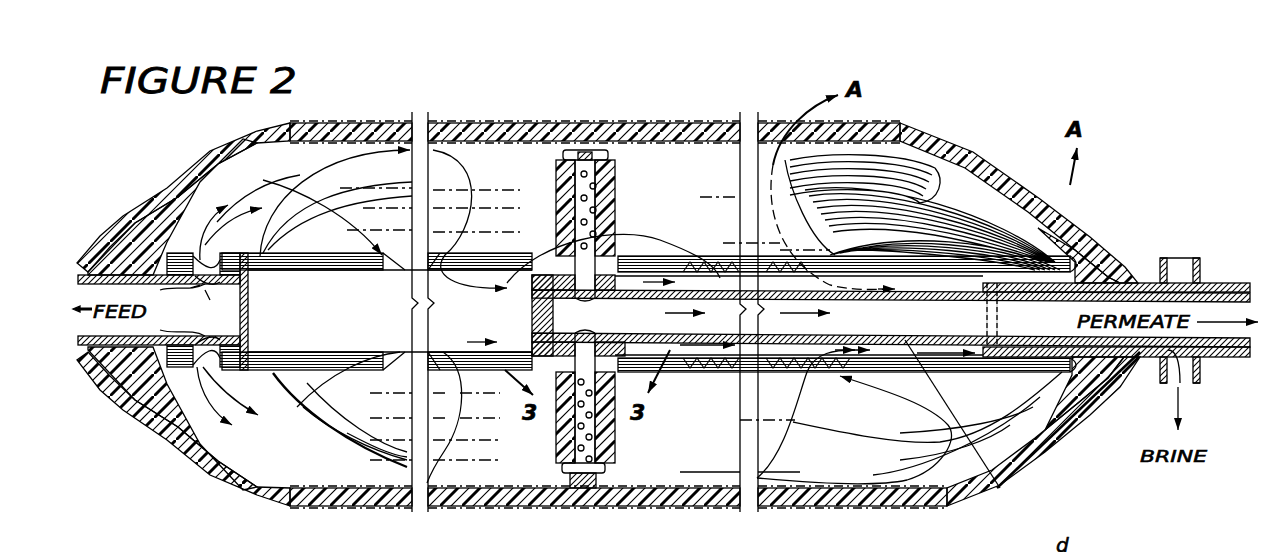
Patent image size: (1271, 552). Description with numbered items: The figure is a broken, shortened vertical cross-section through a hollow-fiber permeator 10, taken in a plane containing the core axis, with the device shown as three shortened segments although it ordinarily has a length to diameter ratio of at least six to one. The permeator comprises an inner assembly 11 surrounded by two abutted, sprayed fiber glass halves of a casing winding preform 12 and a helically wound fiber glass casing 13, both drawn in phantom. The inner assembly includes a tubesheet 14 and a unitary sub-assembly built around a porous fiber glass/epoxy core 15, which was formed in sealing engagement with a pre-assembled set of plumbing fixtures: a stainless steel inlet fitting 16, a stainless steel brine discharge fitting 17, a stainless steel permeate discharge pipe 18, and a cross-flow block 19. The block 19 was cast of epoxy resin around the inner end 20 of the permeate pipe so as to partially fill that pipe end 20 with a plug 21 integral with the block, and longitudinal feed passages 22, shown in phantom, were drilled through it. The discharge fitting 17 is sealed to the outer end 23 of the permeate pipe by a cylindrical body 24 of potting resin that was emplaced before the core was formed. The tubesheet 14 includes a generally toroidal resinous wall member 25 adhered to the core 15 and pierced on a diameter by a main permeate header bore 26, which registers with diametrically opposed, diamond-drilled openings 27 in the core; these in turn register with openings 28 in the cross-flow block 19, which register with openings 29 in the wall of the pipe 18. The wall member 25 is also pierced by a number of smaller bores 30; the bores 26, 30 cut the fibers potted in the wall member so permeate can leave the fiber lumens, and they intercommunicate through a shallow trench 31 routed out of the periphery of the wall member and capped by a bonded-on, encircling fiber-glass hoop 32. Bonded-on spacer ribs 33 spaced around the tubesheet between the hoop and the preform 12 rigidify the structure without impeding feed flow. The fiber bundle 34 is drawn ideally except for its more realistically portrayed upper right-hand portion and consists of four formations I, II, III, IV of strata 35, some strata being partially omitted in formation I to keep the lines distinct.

The permeator 10 is at (935, 522).
The inner assembly 11 is at (305, 458).
The casing winding preform 12 is at (357, 507).
The fiber glass casing 13 is at (480, 507).
The tubesheet 14 is at (720, 270).
The core 15 is at (283, 373).
The inlet fitting 16 is at (115, 275).
The brine discharge fitting 17 is at (1207, 290).
The permeate discharge pipe 18 is at (997, 482).
The cross-flow block 19 is at (552, 273).
The inner end of the permeate discharge pipe 20 is at (672, 308).
The plug 21 is at (630, 277).
The longitudinal feed passages 22 is at (522, 346).
The outer end of the permeate discharge pipe 23 is at (1232, 337).
The cylindrical body of potting resin 24 is at (1207, 357).
The wall member 25 is at (557, 185).
The main bore 26 is at (632, 168).
The openings in the core 27 is at (592, 365).
The openings in the cross-flow block 28 is at (497, 330).
The openings in the wall of the permeate pipe 29 is at (587, 300).
The smaller bores 30 is at (578, 441).
The shallow trench 31 is at (577, 155).
The fiber-glass hoop 32 is at (585, 153).
The spacer ribs 33 is at (578, 487).
The fiber bundle 34 is at (307, 190).
The strata 35 is at (870, 240).
The formation I is at (1097, 246).
The formation II is at (1024, 210).
The formation III is at (982, 180).
The formation IV is at (942, 165).